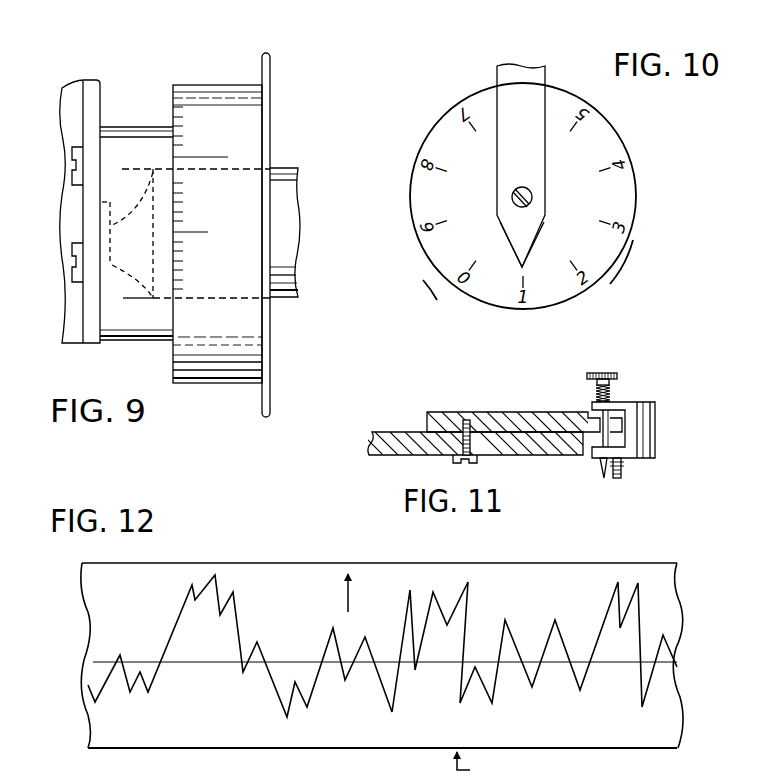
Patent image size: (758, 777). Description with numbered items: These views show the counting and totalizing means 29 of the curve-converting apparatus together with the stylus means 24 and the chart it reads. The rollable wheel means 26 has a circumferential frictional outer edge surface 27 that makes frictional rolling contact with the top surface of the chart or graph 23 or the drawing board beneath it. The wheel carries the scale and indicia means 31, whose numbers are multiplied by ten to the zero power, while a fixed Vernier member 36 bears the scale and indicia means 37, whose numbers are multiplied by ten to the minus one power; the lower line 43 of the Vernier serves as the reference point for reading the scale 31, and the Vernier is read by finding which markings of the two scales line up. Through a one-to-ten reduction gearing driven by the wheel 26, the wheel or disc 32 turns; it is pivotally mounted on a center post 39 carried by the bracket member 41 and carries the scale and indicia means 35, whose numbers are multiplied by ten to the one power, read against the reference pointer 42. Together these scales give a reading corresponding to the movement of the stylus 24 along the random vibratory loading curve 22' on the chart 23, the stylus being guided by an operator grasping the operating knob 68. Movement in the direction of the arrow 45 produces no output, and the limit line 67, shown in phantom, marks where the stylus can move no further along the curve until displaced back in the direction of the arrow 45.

In FIG. 9, the rollable wheel means 26 is at (274, 91).
In FIG. 9, the circumferential frictional outer edge surface 27 is at (268, 55).
In FIG. 9, the counting and totalizing means 29 is at (292, 318).
In FIG. 10, the counting and totalizing means 29 is at (426, 279).
In FIG. 9, the scale and indicia means 31 is at (183, 334).
In FIG. 9, the fixed Vernier member 36 is at (128, 148).
In FIG. 9, the scale and indicia means 37 is at (168, 270).
In FIG. 9, the lower line 43 is at (137, 308).
In FIG. 10, the bracket member 41 is at (537, 80).
In FIG. 10, the center post 39 is at (533, 193).
In FIG. 10, the reference pointer 42 is at (532, 247).
In FIG. 10, the scale and indicia means 35 is at (634, 222).
In FIG. 10, the wheel or disc 32 is at (603, 260).
In FIG. 11, the operating knob 68 is at (603, 373).
In FIG. 11, the stylus means 24 is at (606, 440).
In FIG. 12, the curve 22' is at (382, 646).
In FIG. 12, the arrow 45 is at (350, 600).
In FIG. 12, the limit line 67 is at (451, 665).
In FIG. 12, the chart or graph 23 is at (475, 764).